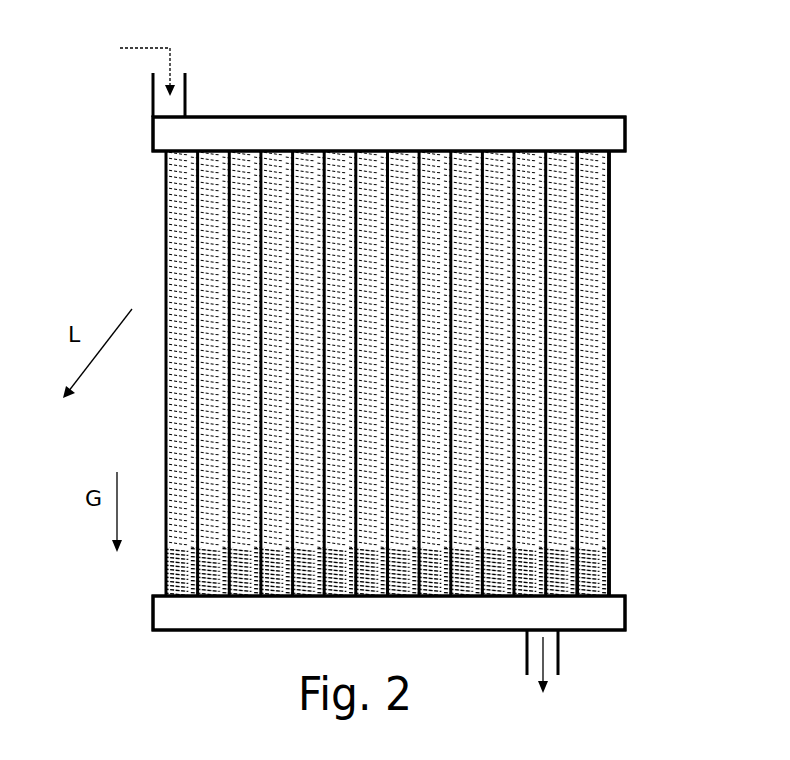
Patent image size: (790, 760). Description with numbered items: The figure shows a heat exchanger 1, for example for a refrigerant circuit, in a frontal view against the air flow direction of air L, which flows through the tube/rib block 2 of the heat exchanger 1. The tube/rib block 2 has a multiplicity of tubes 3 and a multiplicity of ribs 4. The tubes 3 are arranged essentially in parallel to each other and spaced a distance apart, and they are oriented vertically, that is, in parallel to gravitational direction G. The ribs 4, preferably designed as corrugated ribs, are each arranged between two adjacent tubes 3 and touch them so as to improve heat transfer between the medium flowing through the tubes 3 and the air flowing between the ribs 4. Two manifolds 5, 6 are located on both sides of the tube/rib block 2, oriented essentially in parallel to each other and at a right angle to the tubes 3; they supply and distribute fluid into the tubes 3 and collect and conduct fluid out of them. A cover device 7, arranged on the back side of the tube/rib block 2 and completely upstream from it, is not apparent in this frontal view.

The heat exchanger 1 is at (663, 148).
The tube/rib block 2 is at (608, 395).
The tubes 3 is at (608, 442).
The ribs 4 is at (608, 487).
The manifold 5 is at (374, 132).
The manifold 6 is at (560, 600).
The cover device 7 is at (628, 193).